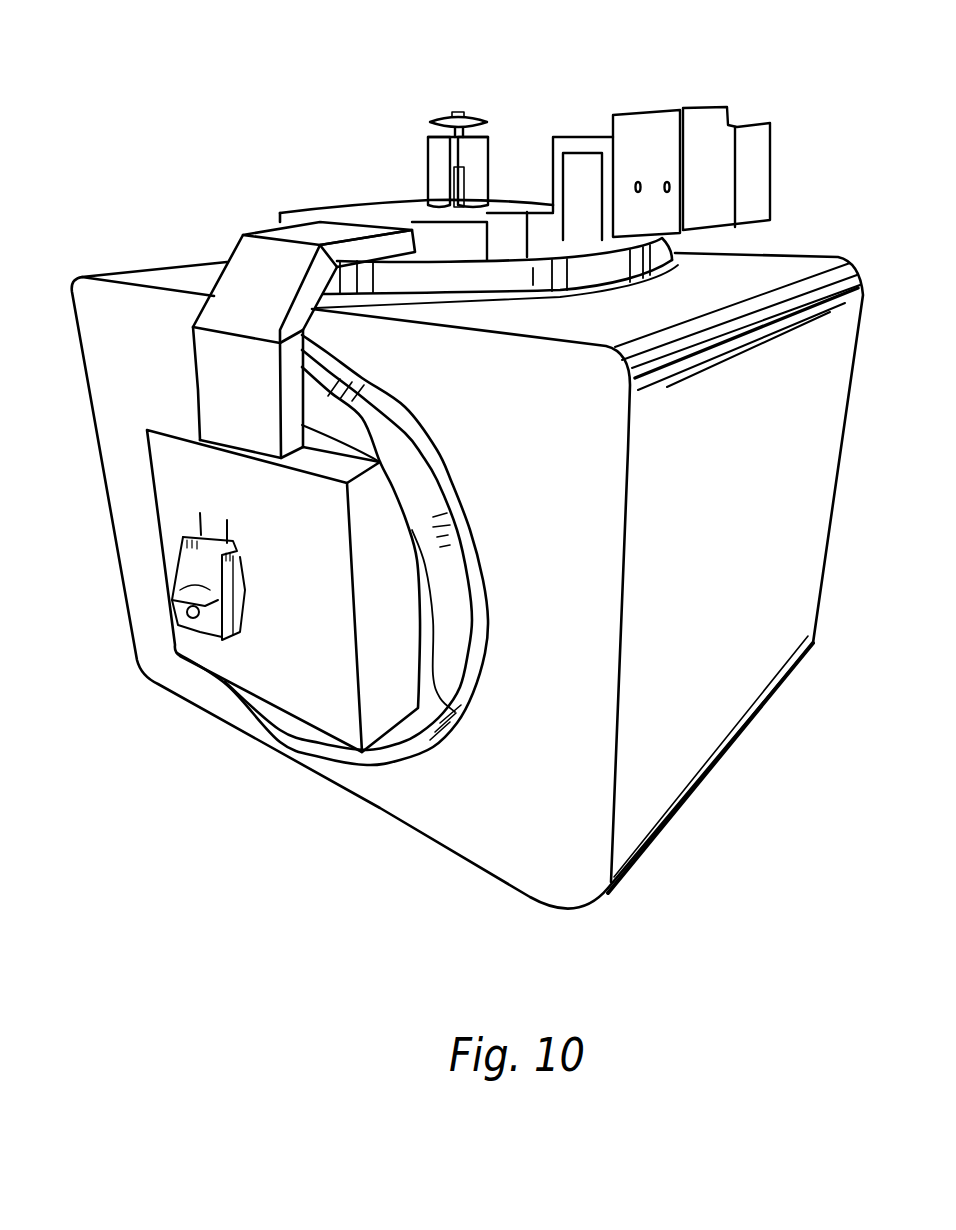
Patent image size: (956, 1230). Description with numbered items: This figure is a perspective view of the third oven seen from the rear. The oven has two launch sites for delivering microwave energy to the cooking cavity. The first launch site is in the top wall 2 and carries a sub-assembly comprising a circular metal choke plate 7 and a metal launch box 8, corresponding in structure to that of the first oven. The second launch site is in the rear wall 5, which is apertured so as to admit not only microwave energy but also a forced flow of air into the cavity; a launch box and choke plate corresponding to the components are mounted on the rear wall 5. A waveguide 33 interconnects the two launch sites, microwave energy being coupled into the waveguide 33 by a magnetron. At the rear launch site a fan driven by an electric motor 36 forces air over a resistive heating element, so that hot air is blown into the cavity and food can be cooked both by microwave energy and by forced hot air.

The top wall 2 is at (763, 277).
The rear wall 5 is at (120, 388).
The choke plate 7 is at (513, 193).
The launch box 8 is at (357, 217).
The waveguide 33 is at (255, 272).
The electric motor 36 is at (212, 622).